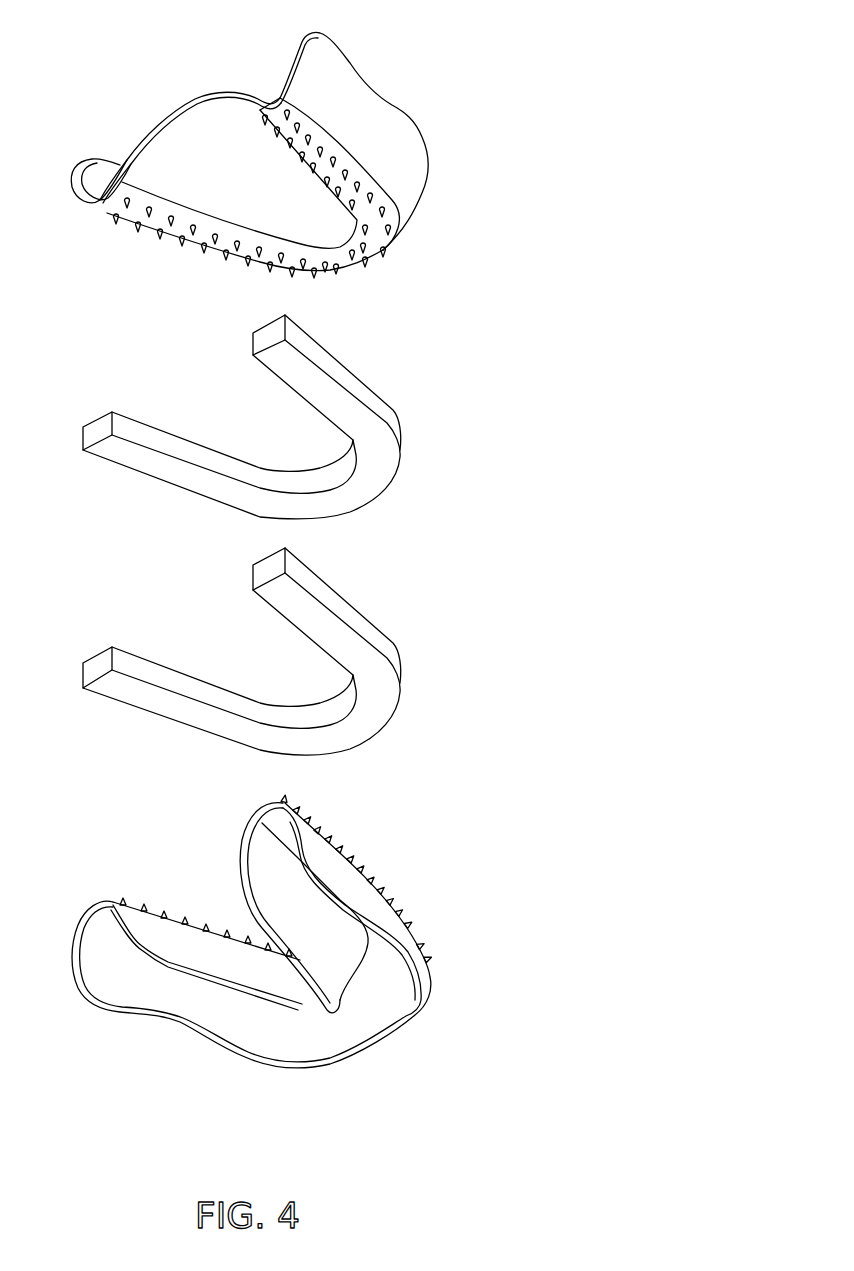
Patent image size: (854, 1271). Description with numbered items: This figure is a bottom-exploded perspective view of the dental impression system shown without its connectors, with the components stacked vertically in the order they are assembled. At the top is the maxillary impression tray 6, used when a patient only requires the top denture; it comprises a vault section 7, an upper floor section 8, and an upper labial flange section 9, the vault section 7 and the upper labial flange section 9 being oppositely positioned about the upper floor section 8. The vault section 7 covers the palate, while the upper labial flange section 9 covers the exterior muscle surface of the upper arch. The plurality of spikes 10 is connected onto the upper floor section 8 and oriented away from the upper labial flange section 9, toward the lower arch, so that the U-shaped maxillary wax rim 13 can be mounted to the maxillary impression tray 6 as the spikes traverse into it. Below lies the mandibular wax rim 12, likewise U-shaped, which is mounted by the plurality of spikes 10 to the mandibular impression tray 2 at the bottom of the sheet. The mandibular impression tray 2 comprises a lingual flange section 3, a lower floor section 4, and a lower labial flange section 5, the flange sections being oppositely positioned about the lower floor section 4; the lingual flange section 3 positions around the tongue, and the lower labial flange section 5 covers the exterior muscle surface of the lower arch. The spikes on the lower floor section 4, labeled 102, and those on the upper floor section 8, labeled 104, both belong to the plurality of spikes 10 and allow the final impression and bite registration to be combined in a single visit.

The mandibular impression tray 2 is at (315, 935).
The lingual flange section 3 is at (310, 997).
The lower floor section 4 is at (293, 843).
The lower labial flange section 5 is at (415, 957).
The maxillary impression tray 6 is at (300, 163).
The vault section 7 is at (187, 108).
The upper floor section 8 is at (373, 250).
The upper labial flange section 9 is at (320, 53).
The plurality of spikes 10 is at (234, 536).
The mandibular wax rim 12 is at (397, 657).
The maxillary wax rim 13 is at (393, 427).
The tray retention teeth 102 is at (363, 803).
The shell retention teeth 104 is at (128, 220).